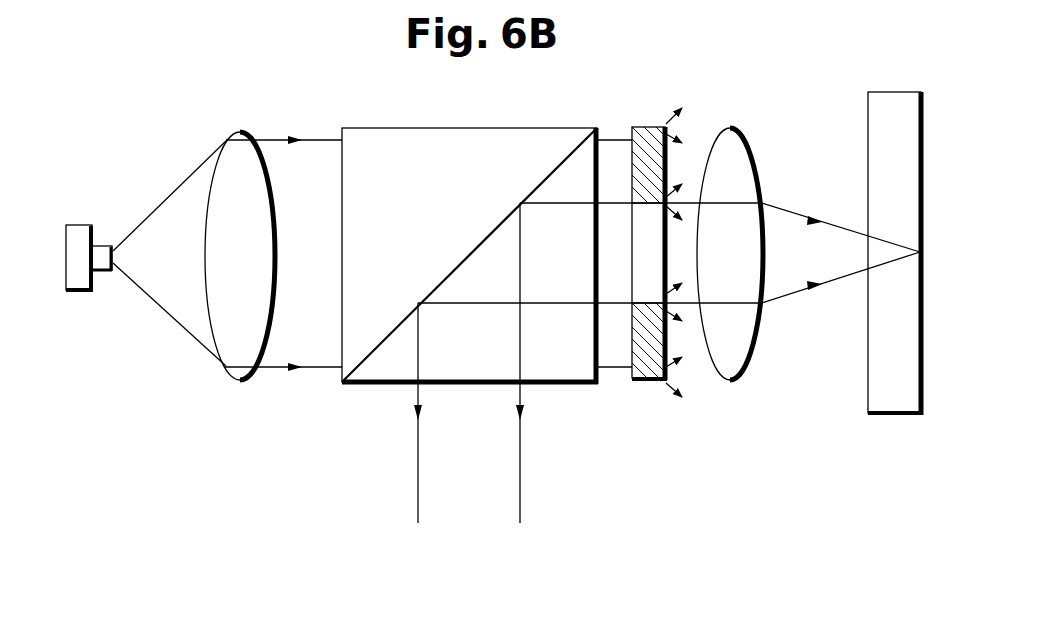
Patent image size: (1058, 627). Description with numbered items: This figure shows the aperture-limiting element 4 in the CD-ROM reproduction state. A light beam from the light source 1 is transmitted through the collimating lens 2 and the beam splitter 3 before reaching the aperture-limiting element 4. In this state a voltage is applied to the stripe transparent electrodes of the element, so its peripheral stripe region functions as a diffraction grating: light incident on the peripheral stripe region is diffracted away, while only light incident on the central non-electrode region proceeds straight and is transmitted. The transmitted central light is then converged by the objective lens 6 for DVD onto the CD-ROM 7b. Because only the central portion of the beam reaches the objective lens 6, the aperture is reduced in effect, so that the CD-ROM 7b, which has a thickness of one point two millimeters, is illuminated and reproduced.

The light source 1 is at (80, 291).
The collimating lens 2 is at (243, 383).
The beam splitter 3 is at (378, 385).
The aperture-limiting element 4 is at (650, 382).
The objective lens 6 is at (731, 382).
The CD-ROM 7b is at (898, 398).